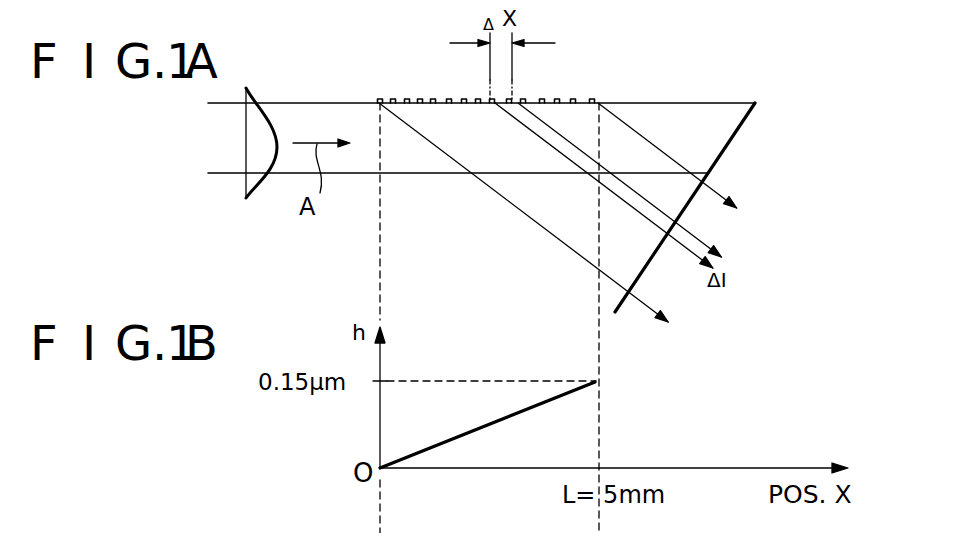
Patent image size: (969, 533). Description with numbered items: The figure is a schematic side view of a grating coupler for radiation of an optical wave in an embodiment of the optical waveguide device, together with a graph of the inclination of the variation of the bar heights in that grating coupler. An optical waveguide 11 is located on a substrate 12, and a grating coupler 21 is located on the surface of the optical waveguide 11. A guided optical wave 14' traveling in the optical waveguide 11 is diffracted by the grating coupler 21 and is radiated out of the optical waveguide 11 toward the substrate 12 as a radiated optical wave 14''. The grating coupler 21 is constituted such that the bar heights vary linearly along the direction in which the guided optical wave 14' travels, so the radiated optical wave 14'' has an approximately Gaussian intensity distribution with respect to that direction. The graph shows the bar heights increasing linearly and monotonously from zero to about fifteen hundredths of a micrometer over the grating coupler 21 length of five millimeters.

The optical waveguide 11 is at (717, 142).
The substrate 12 is at (681, 206).
The guided optical wave 14' is at (296, 123).
The radiated optical wave 14'' is at (558, 212).
The grating coupler 21 is at (579, 100).